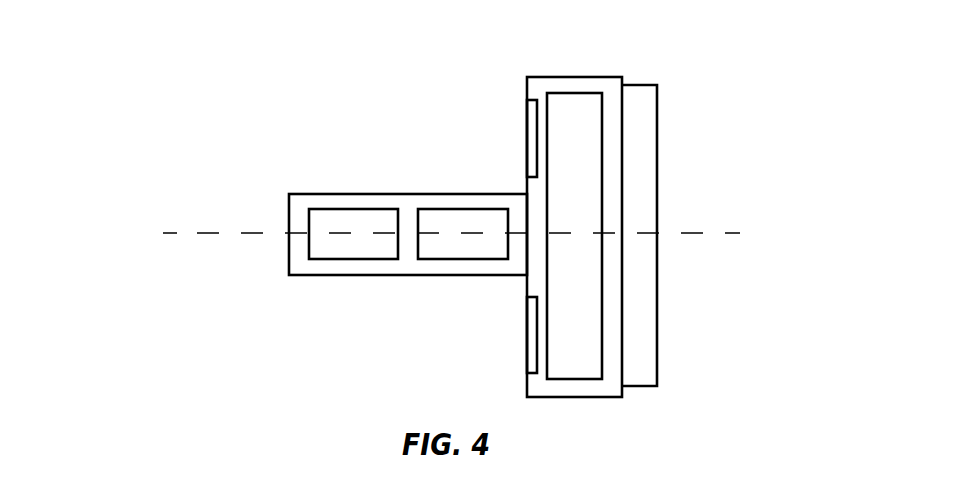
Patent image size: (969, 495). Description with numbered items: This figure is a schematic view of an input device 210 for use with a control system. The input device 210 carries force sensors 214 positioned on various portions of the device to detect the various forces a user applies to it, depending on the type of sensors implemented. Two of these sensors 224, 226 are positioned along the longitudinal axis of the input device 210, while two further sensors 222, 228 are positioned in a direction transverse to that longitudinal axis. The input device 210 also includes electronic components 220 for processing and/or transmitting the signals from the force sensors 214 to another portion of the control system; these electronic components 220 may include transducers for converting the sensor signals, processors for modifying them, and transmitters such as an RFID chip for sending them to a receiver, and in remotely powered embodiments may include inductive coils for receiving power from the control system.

The input device 210 is at (665, 68).
The force sensors 214 is at (140, 83).
The electronic components 220 is at (587, 167).
The sensor 222 is at (533, 138).
The sensor 224 is at (450, 223).
The sensor 226 is at (357, 233).
The sensor 228 is at (533, 336).